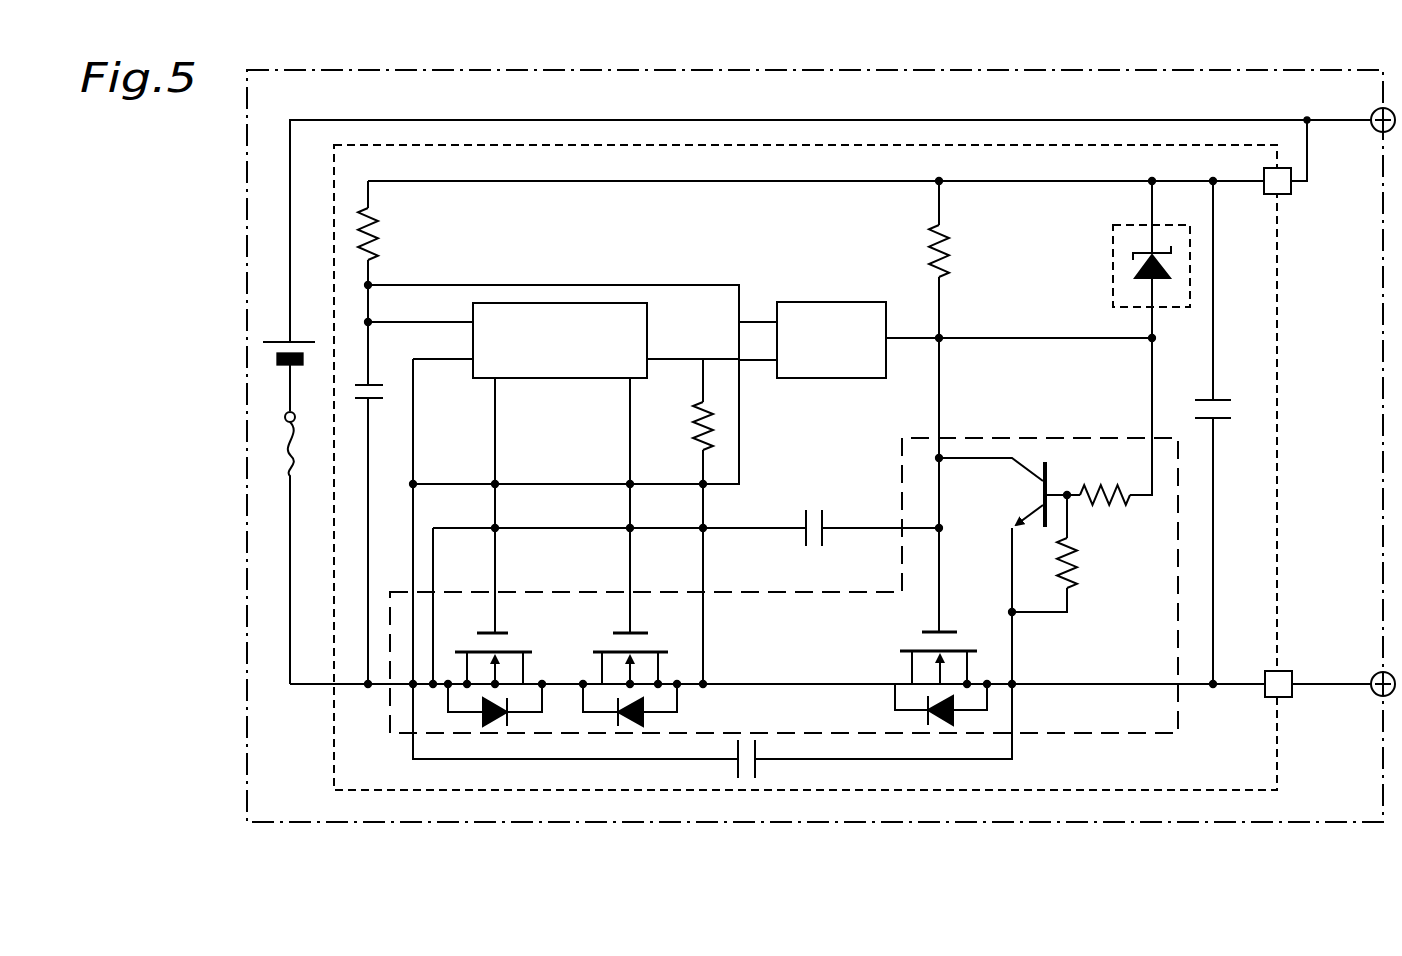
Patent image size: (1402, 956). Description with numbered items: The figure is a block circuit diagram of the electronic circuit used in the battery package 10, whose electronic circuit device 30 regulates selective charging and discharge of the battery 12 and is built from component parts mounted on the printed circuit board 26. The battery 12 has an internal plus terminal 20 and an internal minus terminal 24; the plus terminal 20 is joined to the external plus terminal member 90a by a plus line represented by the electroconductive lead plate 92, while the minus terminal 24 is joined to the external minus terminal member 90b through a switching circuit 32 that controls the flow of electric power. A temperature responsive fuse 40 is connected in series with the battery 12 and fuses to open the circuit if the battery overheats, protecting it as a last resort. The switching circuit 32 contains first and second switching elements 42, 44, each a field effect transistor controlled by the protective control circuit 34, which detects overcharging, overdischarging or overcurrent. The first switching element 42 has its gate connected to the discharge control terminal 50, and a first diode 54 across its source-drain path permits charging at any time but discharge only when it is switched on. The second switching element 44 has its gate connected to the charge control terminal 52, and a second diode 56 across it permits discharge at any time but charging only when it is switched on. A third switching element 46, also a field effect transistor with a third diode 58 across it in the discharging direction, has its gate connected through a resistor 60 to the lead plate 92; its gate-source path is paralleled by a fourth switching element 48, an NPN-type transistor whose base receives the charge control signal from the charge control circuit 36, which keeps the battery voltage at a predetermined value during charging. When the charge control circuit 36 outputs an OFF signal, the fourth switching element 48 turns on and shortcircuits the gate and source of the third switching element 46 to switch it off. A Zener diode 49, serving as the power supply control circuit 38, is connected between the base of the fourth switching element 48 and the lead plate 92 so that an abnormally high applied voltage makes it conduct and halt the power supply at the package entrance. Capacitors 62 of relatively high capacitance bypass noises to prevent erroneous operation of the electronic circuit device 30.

The battery package 10 is at (247, 588).
The battery 12 is at (276, 358).
The internal plus terminal 20 is at (280, 340).
The internal minus terminal 24 is at (289, 370).
The printed circuit board 26 is at (490, 792).
The electronic circuit device 30 is at (298, 715).
The switching circuit 32 is at (904, 438).
The protective control circuit 34 is at (563, 303).
The charge control circuit 36 is at (828, 302).
The power supply control circuit 38 is at (1102, 258).
The temperature responsive fuse 40 is at (287, 456).
The first switching element 42 is at (508, 633).
The second switching element 44 is at (655, 650).
The third switching element 46 is at (945, 632).
The fourth switching element 48 is at (1048, 460).
The Zener diode 49 is at (1147, 252).
The discharge control terminal 50 is at (497, 385).
The charge control terminal 52 is at (632, 385).
The first diode 54 is at (480, 716).
The second diode 56 is at (638, 727).
The third diode 58 is at (958, 727).
The resistor 60 is at (934, 236).
The capacitors 62 is at (385, 385).
The external plus terminal member 90a is at (1374, 110).
The external minus terminal member 90b is at (1375, 696).
The lead plate 92 is at (550, 120).